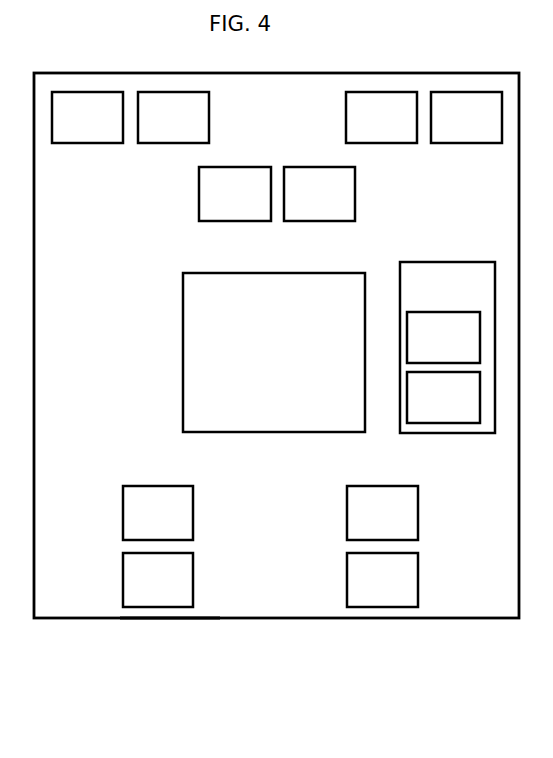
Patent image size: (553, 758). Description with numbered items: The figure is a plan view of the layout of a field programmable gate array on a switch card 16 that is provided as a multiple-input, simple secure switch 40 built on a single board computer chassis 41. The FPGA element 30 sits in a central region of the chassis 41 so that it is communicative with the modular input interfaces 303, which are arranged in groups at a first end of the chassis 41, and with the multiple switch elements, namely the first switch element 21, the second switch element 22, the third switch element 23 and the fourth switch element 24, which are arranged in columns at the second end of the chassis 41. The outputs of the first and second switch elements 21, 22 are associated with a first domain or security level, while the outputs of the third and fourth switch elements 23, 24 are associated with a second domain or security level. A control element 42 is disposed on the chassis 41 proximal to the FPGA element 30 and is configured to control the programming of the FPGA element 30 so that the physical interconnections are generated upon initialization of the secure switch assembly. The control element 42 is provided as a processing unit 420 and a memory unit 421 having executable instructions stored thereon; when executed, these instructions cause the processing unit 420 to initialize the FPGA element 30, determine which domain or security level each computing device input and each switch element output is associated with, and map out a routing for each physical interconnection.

The switch card 16 is at (276, 408).
The multiple-input, simple secure switch 40 is at (114, 633).
The single board computer chassis 41 is at (167, 618).
The modular input interfaces 303 is at (67, 123).
The field programmable gate array element 30 is at (259, 372).
The control element 42 is at (433, 301).
The processing unit 420 is at (423, 342).
The memory unit 421 is at (423, 404).
The first switch element 21 is at (144, 520).
The second switch element 22 is at (144, 586).
The third switch element 23 is at (368, 520).
The fourth switch element 24 is at (368, 586).